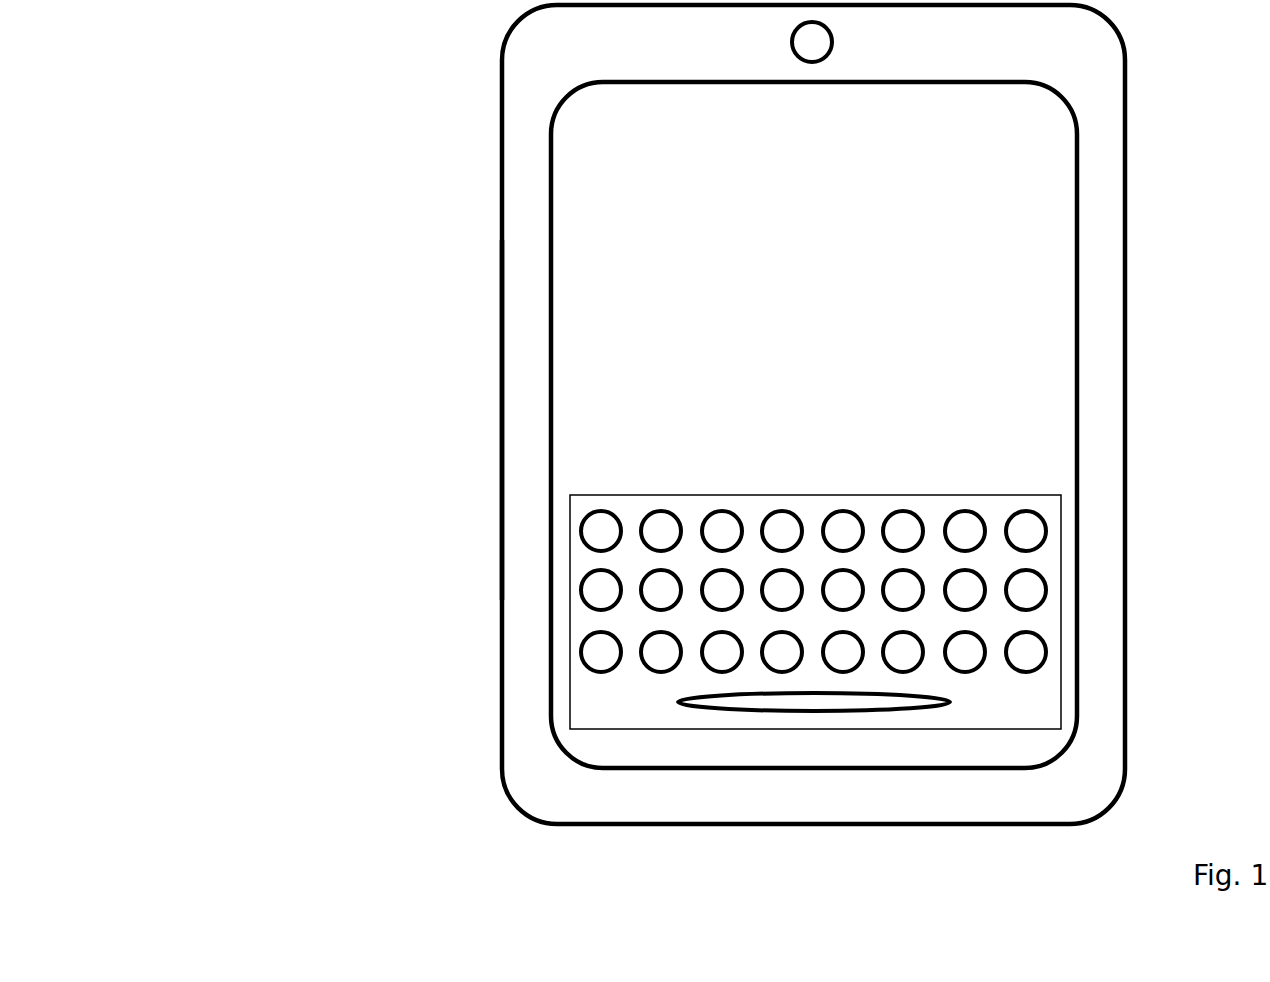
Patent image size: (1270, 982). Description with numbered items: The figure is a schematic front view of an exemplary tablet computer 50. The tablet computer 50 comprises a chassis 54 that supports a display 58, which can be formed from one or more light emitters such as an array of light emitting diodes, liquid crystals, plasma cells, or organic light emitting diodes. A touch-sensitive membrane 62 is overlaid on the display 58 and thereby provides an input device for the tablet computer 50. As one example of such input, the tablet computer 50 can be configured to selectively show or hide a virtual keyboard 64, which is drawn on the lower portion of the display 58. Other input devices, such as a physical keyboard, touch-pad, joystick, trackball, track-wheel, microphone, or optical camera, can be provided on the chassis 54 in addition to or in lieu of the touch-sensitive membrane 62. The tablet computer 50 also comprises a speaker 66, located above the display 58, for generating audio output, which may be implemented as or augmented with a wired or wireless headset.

The tablet computer 50 is at (220, 747).
The chassis 54 is at (478, 381).
The display 58 is at (562, 247).
The touch-sensitive membrane 62 is at (568, 224).
The virtual keyboard 64 is at (576, 626).
The speaker 66 is at (762, 41).